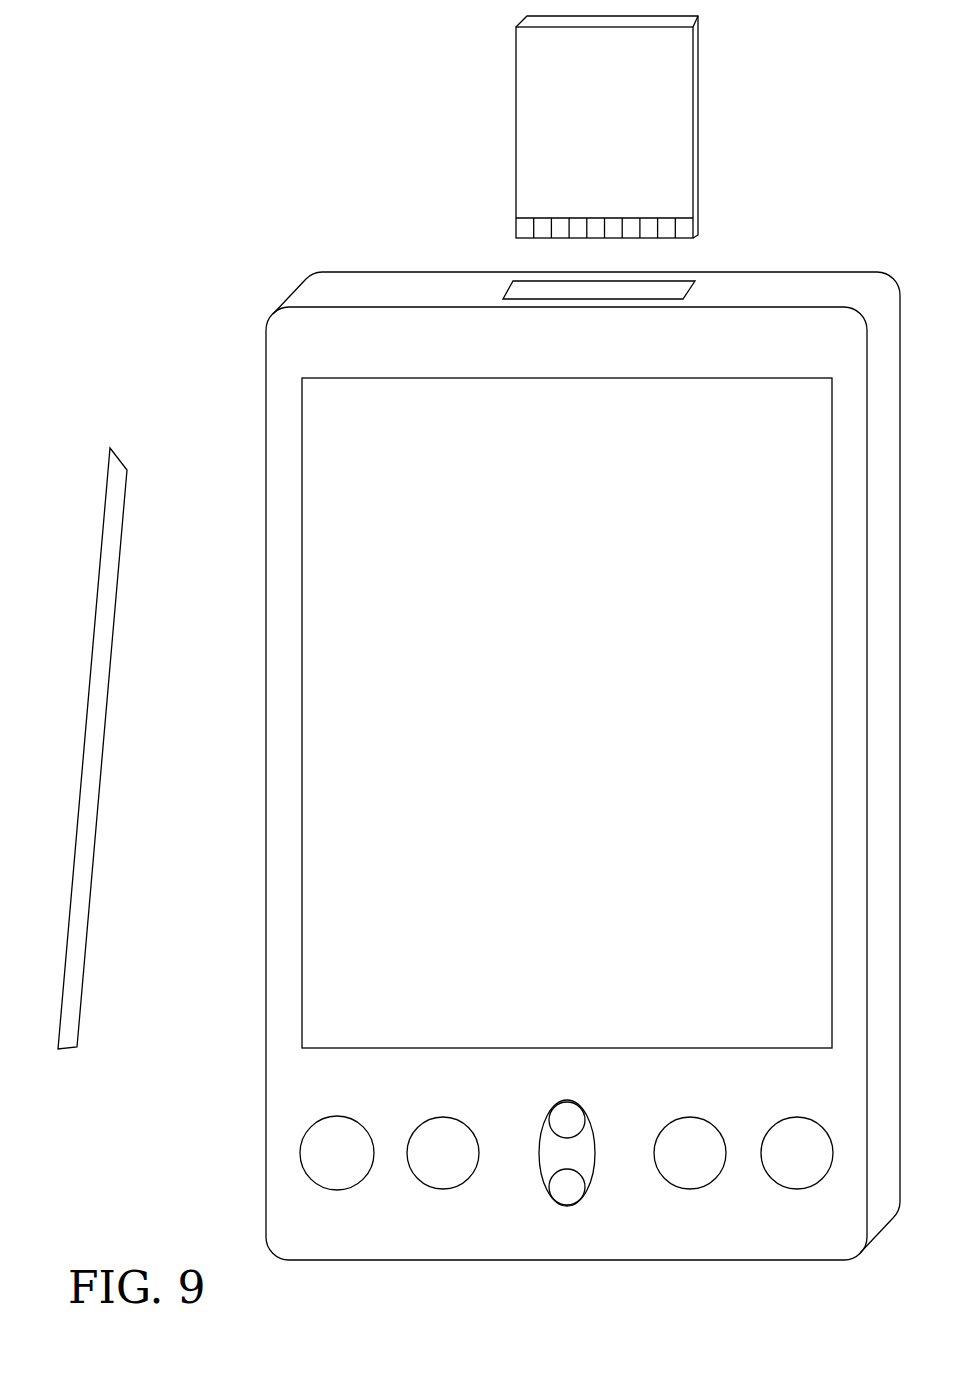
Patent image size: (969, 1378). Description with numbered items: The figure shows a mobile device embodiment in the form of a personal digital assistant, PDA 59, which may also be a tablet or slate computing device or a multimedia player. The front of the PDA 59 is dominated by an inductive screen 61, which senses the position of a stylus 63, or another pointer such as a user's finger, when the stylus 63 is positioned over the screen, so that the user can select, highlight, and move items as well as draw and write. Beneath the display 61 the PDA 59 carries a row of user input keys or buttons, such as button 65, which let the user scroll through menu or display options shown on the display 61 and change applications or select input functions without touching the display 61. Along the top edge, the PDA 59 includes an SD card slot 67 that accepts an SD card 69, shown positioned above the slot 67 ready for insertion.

The personal digital assistant (PDA) 59 is at (215, 514).
The inductive screen 61 is at (516, 708).
The stylus 63 is at (76, 1047).
The button 65 is at (320, 1146).
The SD card slot 67 is at (603, 290).
The SD card 69 is at (516, 130).